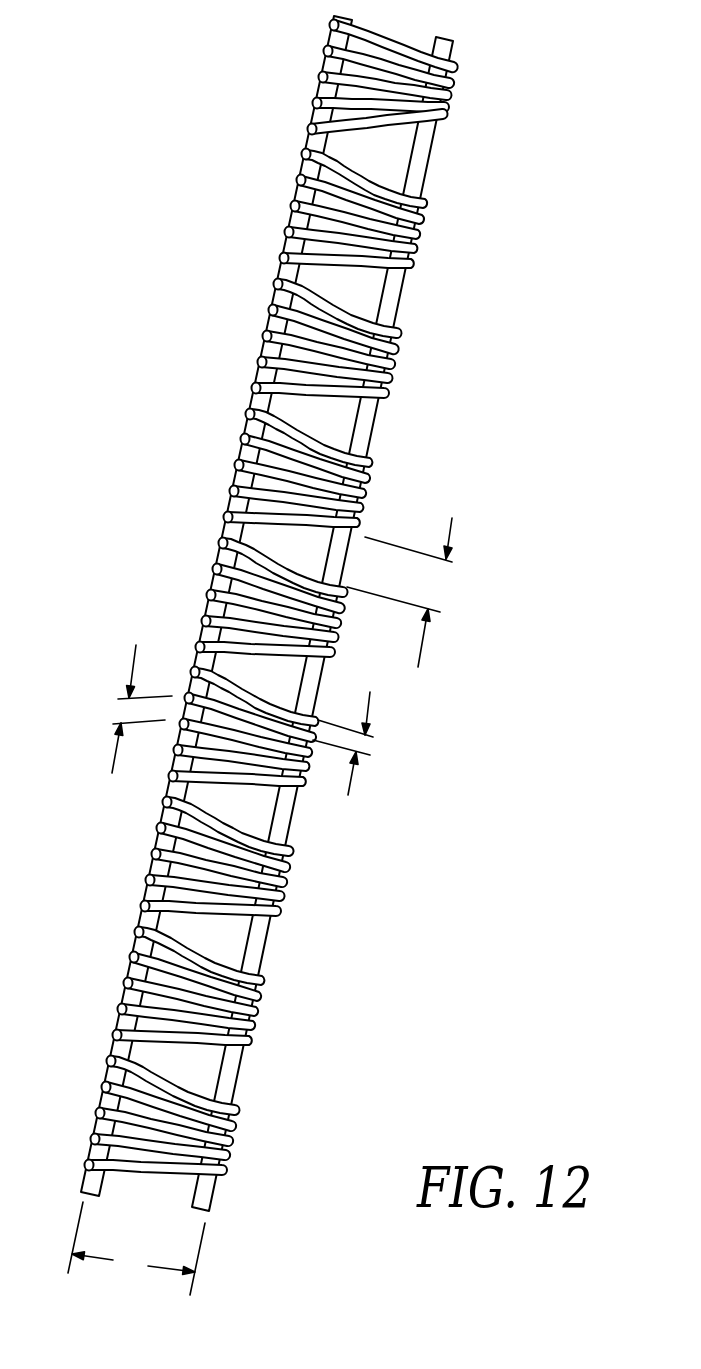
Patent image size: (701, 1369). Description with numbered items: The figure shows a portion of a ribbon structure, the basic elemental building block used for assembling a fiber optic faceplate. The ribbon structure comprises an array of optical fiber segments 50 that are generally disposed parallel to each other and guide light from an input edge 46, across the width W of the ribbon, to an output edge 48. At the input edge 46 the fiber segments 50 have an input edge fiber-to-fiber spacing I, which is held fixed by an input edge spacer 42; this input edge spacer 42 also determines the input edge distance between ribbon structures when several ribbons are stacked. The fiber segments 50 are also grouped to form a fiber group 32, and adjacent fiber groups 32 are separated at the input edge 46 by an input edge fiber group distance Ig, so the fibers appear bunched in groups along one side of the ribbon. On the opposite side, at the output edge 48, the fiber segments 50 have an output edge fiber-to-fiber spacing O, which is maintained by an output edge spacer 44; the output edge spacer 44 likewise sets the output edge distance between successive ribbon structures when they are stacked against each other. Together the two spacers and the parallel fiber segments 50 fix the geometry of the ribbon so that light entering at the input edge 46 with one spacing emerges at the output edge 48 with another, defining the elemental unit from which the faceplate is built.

The fiber group 32 is at (415, 283).
The input edge spacer 42 is at (238, 1071).
The output edge spacer 44 is at (130, 970).
The input edge 46 is at (367, 414).
The output edge 48 is at (266, 336).
The optical fiber segments 50 is at (296, 180).
The input edge fiber group distance Ig is at (402, 592).
The input edge fiber-to-fiber spacing I is at (346, 728).
The output edge fiber-to-fiber spacing O is at (142, 693).
The width W is at (136, 1248).